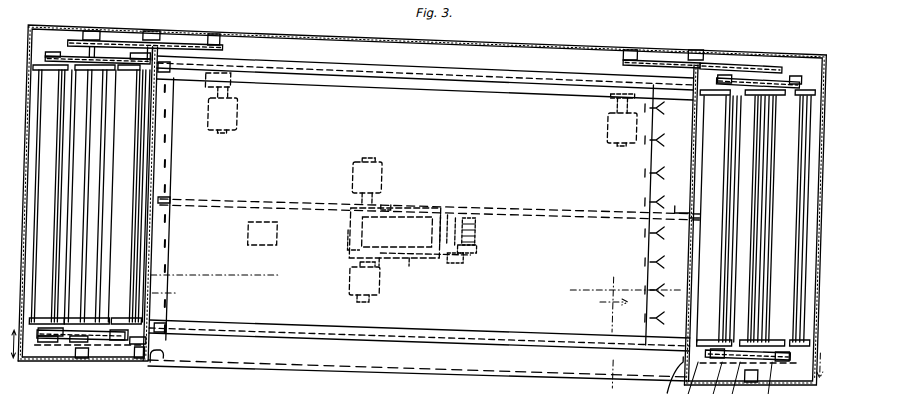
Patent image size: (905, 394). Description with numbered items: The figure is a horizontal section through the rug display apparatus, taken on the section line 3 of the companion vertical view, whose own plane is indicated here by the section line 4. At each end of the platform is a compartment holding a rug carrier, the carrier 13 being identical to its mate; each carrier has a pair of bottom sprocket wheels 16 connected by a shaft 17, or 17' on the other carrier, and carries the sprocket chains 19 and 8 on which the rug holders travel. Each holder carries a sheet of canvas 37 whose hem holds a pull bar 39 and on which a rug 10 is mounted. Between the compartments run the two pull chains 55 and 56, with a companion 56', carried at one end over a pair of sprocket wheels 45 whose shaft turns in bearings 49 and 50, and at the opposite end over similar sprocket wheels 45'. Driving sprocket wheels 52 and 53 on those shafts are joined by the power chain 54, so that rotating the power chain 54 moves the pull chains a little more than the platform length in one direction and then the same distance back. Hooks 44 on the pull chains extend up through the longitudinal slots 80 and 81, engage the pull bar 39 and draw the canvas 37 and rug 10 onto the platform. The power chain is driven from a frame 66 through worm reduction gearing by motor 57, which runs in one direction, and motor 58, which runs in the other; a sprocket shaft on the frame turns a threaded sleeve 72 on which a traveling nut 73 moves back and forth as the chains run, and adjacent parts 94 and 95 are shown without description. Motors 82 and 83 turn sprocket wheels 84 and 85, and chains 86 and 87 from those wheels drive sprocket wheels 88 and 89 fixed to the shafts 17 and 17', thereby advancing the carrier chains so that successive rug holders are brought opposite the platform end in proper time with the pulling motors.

The section line 3 is at (158, 364).
The frame end 4 is at (13, 351).
The chain 8 is at (514, 364).
The rug 10 is at (214, 393).
The rug carrier 13 is at (110, 380).
The bottom sprocket wheels 16 is at (64, 342).
The shaft 17 is at (758, 53).
The shaft 17' is at (68, 360).
The chain 19 is at (778, 78).
The sheet of canvas 37 is at (192, 388).
The pull bar 39 is at (273, 387).
The hook 44 is at (254, 393).
The sprocket wheel 45 is at (174, 197).
The sprocket wheel 45' is at (662, 218).
The bearing 49 is at (142, 356).
The bearing 50 is at (150, 31).
The driving sprocket wheel 52 is at (169, 199).
The driving sprocket wheel 53 is at (679, 210).
The power chain 54 is at (562, 218).
The pull chain 55 is at (538, 82).
The pull chain 56 is at (419, 343).
The rail 56' is at (605, 6).
The motor 57 is at (385, 170).
The motor 58 is at (385, 280).
The frame 66 is at (414, 256).
The threaded sleeve 72 is at (479, 232).
The traveling nut 73 is at (482, 249).
The slot 80 is at (360, 76).
The slot 81 is at (321, 331).
The motor 82 is at (605, 136).
The motor 83 is at (236, 117).
The sprocket wheel 84 is at (620, 50).
The sprocket wheel 85 is at (215, 47).
The chain 86 is at (663, 60).
The chain 87 is at (182, 42).
The sprocket wheel 88 is at (773, 67).
The sprocket wheel 89 is at (68, 41).
The link 94 is at (468, 264).
The block 95 is at (453, 269).